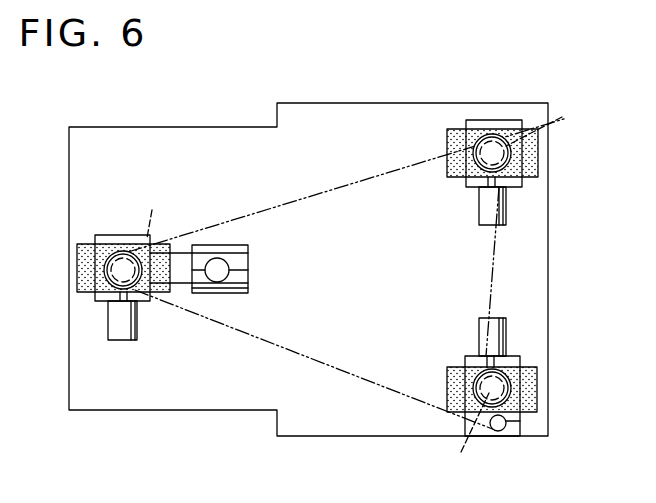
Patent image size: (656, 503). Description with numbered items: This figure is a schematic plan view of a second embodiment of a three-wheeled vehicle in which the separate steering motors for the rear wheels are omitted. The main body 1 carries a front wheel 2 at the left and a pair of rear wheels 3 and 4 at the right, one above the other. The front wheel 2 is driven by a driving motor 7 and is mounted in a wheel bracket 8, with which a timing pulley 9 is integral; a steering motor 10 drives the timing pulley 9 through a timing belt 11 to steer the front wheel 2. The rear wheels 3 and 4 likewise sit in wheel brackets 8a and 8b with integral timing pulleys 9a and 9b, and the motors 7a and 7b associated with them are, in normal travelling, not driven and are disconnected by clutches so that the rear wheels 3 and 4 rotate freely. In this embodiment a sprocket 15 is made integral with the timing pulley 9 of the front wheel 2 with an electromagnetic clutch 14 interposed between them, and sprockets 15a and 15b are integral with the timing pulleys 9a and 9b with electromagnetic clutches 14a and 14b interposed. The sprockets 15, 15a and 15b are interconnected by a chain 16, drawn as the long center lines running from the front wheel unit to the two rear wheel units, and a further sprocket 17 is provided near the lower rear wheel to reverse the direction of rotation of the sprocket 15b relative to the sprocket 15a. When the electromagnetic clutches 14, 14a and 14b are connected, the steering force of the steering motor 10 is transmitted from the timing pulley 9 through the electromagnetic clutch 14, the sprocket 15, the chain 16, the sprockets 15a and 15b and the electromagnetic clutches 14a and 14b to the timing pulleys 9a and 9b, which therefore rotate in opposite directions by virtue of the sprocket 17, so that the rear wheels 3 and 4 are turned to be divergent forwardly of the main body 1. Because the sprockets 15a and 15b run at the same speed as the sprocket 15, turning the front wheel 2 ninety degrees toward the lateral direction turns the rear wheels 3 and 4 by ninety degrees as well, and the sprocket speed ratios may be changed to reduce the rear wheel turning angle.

The main body 1 is at (262, 112).
The front wheel 2 is at (82, 269).
The rear wheel 3 is at (538, 160).
The rear wheel 4 is at (537, 392).
The driving motor 7 is at (138, 330).
The steering motor 7a is at (479, 210).
The steering motor 7b is at (506, 334).
The wheel bracket 8 is at (95, 234).
The wheel bracket 8a is at (523, 184).
The wheel bracket 8b is at (467, 357).
The timing pulley 9 is at (121, 251).
The timing pulley 9a is at (484, 137).
The timing pulley 9b is at (511, 376).
The steering motor 10 is at (247, 261).
The timing belt 11 is at (177, 247).
The electromagnetic clutch 14 is at (152, 210).
The electromagnetic clutch 14a is at (557, 122).
The electromagnetic clutch 14b is at (461, 437).
The sprocket 15 is at (140, 246).
The sprocket 15a is at (506, 142).
The sprocket 15b is at (510, 396).
The chain 16 is at (292, 202).
The sprocket 17 is at (503, 431).